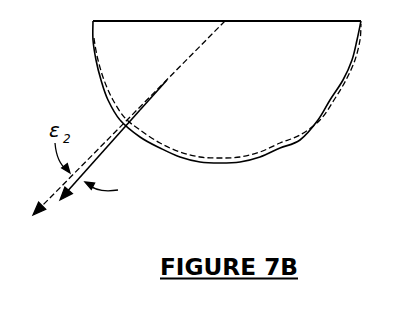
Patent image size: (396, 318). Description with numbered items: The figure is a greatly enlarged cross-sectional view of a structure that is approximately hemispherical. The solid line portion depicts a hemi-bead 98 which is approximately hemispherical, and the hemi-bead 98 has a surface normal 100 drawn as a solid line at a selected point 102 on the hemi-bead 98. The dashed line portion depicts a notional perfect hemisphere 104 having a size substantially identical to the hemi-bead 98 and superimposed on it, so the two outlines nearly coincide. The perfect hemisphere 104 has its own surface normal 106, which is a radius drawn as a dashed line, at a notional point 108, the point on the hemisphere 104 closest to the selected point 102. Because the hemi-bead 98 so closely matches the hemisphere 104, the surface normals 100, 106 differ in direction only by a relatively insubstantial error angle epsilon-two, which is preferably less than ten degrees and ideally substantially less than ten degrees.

The hemi-bead 98 is at (204, 126).
The surface normal 100 is at (142, 140).
The selected point 102 is at (110, 100).
The perfect hemisphere 104 is at (240, 156).
The surface normal 106 is at (173, 76).
The notional point 108 is at (160, 87).